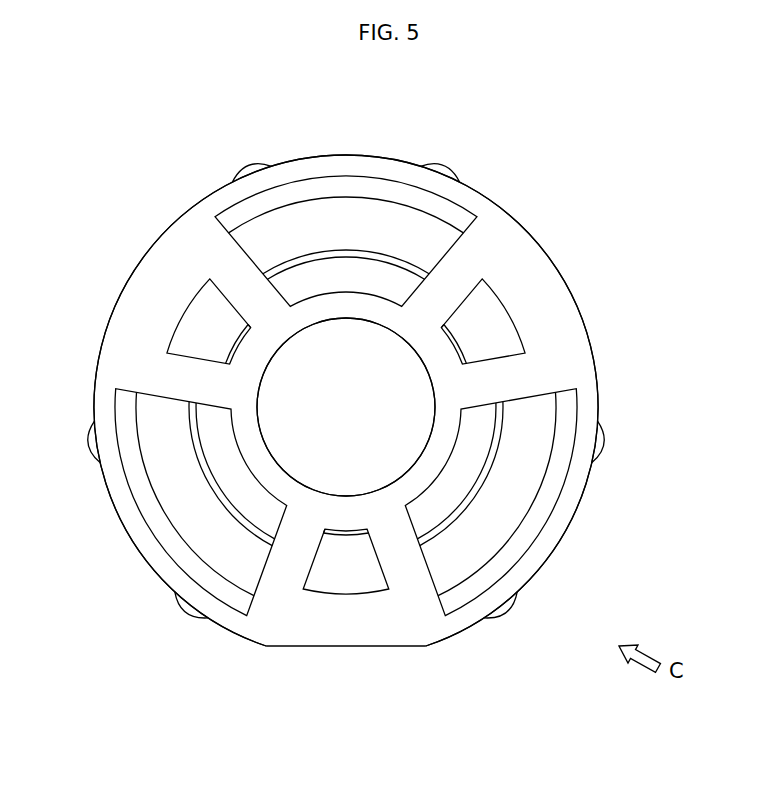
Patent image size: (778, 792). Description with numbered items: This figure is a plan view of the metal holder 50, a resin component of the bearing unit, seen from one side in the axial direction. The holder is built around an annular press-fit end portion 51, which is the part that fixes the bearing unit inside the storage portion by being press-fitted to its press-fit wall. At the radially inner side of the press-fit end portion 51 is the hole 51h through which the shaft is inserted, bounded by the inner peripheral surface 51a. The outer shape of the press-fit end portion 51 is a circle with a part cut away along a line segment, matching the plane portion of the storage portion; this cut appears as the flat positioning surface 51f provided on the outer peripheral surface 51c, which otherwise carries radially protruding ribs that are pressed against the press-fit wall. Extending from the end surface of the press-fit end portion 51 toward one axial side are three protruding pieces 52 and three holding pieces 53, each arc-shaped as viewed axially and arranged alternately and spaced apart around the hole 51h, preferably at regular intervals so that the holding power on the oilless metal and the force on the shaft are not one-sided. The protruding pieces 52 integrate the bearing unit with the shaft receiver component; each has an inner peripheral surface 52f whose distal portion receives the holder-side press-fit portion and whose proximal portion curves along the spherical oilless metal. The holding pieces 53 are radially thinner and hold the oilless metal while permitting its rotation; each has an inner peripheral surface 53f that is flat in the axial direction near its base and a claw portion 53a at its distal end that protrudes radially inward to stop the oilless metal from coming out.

The metal holder 50 is at (578, 196).
The press-fit end portion 51 is at (552, 250).
The inner peripheral surface 51a is at (280, 460).
The outer peripheral surface 51c is at (567, 287).
The positioning surface 51f is at (386, 647).
The hole 51h is at (328, 415).
The protruding pieces 52 is at (372, 174).
The inner peripheral surface 52f is at (350, 276).
The holding pieces 53 is at (185, 300).
The claw portion 53a is at (226, 361).
The inner peripheral surface 53f is at (247, 331).